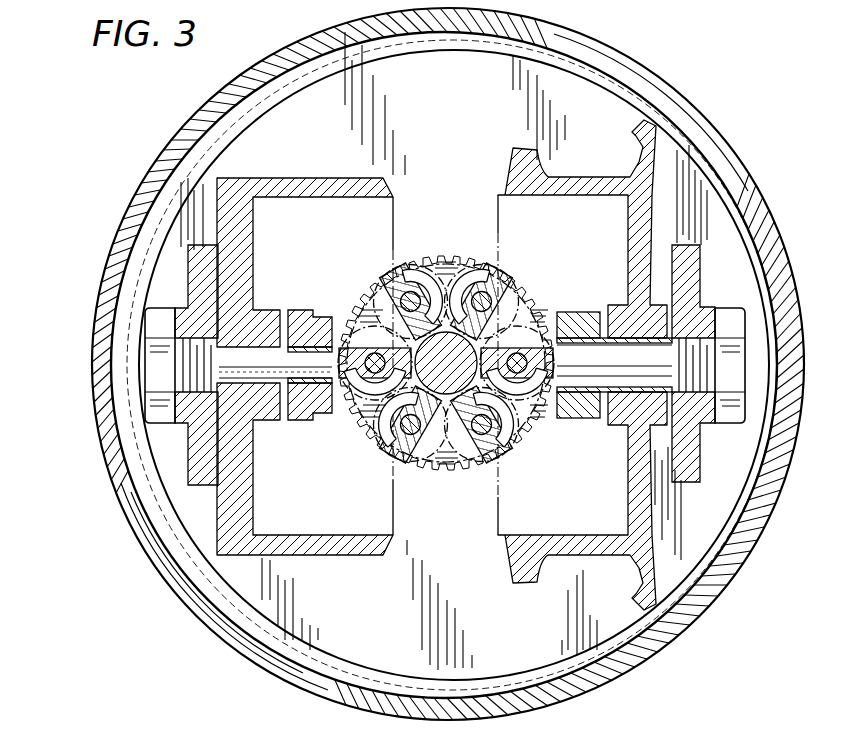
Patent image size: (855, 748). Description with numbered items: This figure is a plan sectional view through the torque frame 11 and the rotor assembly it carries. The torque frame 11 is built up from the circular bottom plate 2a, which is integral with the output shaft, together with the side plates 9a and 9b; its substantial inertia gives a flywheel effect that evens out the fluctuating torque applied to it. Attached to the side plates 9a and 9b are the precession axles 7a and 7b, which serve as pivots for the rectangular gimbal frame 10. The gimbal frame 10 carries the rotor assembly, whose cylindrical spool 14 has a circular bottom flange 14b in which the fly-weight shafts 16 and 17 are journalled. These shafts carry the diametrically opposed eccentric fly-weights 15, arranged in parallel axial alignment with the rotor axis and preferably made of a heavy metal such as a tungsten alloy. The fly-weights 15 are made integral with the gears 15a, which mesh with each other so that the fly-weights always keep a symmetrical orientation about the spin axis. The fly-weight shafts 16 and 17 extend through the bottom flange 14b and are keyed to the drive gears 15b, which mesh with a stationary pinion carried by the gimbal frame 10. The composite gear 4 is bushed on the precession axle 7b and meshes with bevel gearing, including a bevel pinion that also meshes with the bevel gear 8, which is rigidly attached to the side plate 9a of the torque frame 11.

The circular bottom plate 2a is at (273, 633).
The composite gear 4 is at (555, 177).
The precession axle 7a is at (145, 320).
The precession axle 7b is at (745, 320).
The bevel gear 8 is at (322, 178).
The side plate 9a is at (190, 455).
The side plate 9b is at (700, 455).
The rectangular gimbal frame 10 is at (298, 310).
The torque frame 11 is at (203, 585).
The cylindrical spool 14 is at (446, 363).
The bottom flange 14b is at (446, 264).
The eccentric fly-weight 15 is at (443, 470).
The gear 15a is at (378, 428).
The drive gear 15b is at (514, 262).
The fly-weight shaft 16 is at (382, 300).
The fly-weight shaft 17 is at (490, 300).